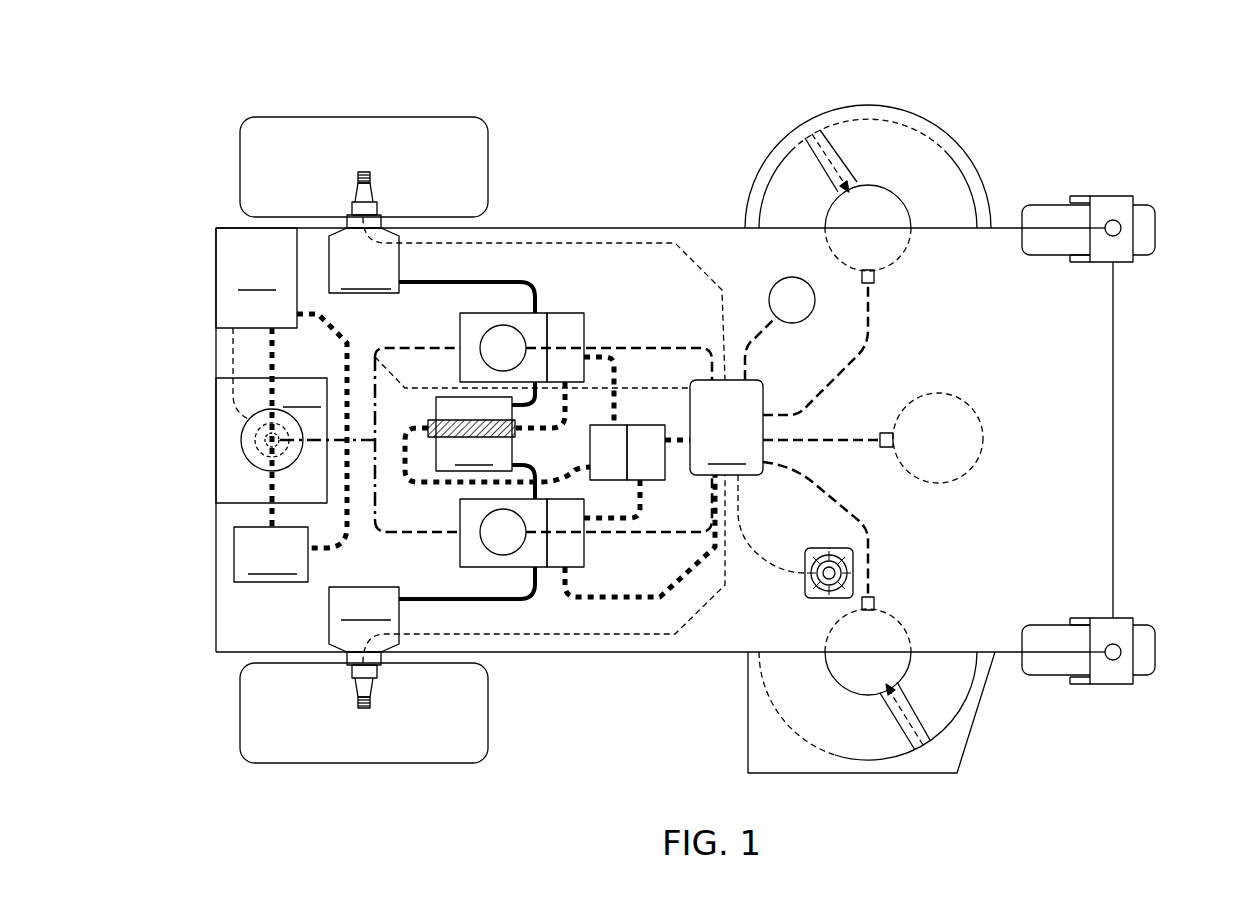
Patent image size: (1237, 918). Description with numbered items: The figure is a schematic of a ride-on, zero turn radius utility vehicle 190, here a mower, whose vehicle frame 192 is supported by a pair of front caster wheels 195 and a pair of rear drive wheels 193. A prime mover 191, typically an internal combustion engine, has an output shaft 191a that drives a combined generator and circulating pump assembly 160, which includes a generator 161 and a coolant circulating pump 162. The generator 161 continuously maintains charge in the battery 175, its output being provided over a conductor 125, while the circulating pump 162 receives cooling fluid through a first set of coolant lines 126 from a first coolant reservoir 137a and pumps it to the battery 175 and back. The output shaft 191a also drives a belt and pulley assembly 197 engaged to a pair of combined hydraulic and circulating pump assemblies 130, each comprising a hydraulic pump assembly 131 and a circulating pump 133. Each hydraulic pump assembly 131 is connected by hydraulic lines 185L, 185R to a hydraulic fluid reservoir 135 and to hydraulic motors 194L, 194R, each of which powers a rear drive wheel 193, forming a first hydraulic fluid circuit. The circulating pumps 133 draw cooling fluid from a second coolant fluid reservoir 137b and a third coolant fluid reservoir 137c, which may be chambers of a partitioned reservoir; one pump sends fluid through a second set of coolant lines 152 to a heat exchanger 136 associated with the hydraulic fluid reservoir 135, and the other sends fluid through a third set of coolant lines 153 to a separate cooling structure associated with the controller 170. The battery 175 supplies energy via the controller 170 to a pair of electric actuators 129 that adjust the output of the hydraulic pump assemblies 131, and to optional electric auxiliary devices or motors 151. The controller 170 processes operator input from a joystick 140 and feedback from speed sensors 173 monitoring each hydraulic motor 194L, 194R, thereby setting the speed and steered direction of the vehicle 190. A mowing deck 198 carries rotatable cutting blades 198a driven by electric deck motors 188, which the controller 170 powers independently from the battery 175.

The utility vehicle 190 is at (172, 136).
The vehicle frame 192 is at (577, 232).
The rear drive wheel 193 is at (367, 117).
The hydraulic motor 194L is at (364, 260).
The hydraulic motor 194R is at (364, 619).
The speed sensor 173 is at (378, 212).
The battery 175 is at (256, 278).
The conductor 125 is at (232, 352).
The prime mover 191 is at (271, 440).
The combined generator and circulating pump assembly 160 is at (240, 431).
The output shaft 191a is at (263, 437).
The generator 161 is at (252, 462).
The coolant circulating pump 162 is at (284, 456).
The first set of coolant lines 126 is at (345, 322).
The first coolant reservoir 137a is at (271, 554).
The belt and pulley assembly 197 is at (393, 540).
The hydraulic line 185L is at (428, 282).
The hydraulic line 185R is at (428, 599).
The combined hydraulic and circulating pump assembly 130 is at (532, 443).
The hydraulic pump assembly 131 is at (510, 313).
The electric actuator 129 is at (481, 347).
The circulating pump 133 is at (584, 330).
The hydraulic fluid reservoir 135 is at (474, 434).
The heat exchanger 136 is at (447, 428).
The second set of coolant lines 152 is at (616, 357).
The third set of coolant lines 153 is at (623, 598).
The second coolant fluid reservoir 137b is at (590, 440).
The third coolant fluid reservoir 137c is at (646, 482).
The controller 170 is at (644, 440).
The electric auxiliary device or motor 151 is at (792, 323).
The joystick 140 is at (814, 548).
The mowing deck 198 is at (870, 106).
The cutting blade 198a is at (838, 157).
The electric deck motor 188 is at (902, 252).
The front caster wheel 195 is at (1157, 231).